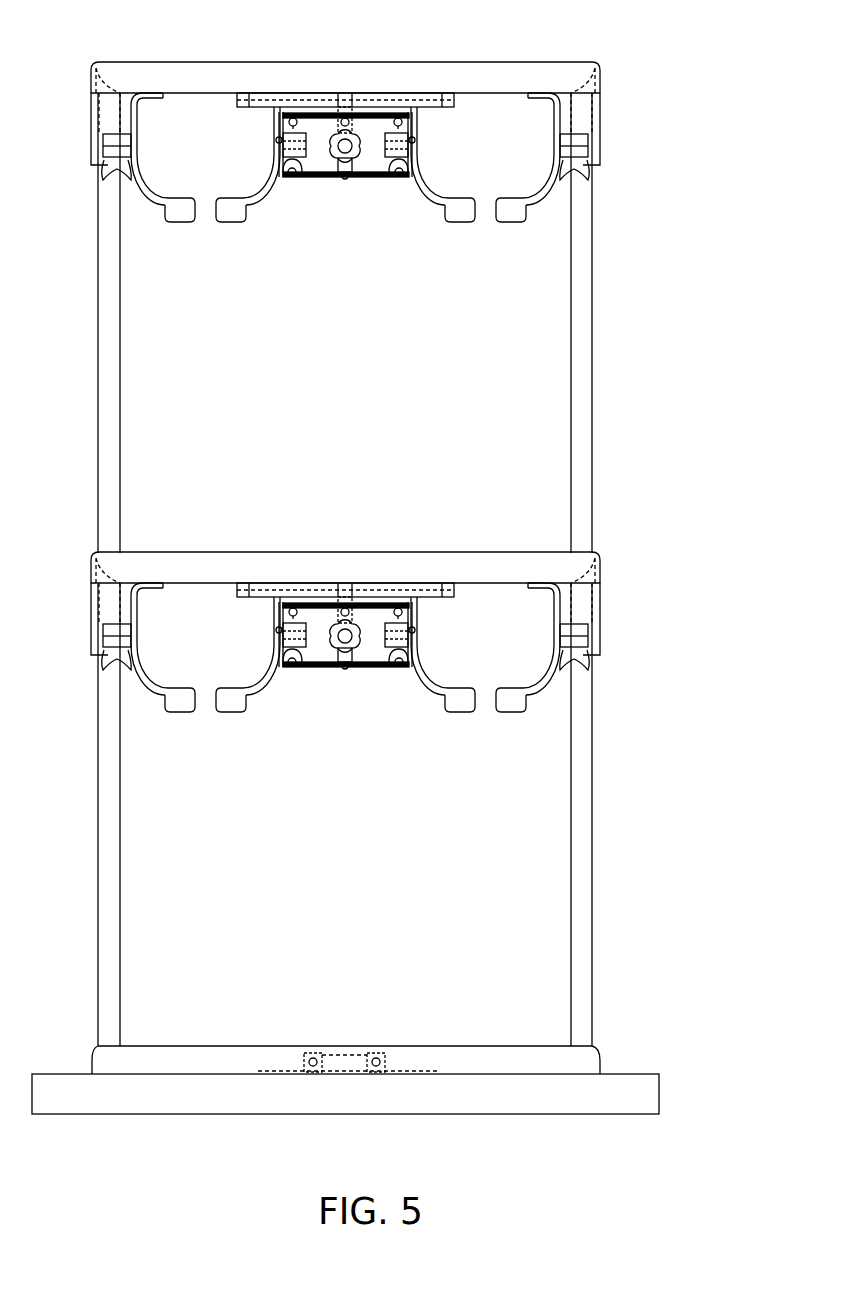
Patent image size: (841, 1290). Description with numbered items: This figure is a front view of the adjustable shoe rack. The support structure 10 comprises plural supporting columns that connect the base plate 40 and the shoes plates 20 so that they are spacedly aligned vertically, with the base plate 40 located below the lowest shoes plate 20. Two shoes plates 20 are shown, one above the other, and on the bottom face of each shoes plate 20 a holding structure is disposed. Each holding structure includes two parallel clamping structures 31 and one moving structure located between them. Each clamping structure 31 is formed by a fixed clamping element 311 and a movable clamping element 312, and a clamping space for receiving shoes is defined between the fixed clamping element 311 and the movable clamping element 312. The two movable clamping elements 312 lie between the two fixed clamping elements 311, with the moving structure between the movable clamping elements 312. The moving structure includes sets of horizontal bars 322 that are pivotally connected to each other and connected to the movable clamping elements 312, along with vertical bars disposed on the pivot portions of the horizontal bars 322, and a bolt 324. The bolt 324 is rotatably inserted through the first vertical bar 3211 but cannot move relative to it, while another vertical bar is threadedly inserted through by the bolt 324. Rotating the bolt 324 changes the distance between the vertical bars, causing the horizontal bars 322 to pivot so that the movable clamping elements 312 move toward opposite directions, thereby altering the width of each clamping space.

The support structure 10 is at (590, 727).
The shoes plate 20 is at (496, 70).
The clamping structure 31 is at (204, 214).
The fixed clamping element 311 is at (181, 213).
The movable clamping element 312 is at (235, 244).
The horizontal bar 322 is at (315, 113).
The bolt 324 is at (356, 140).
The first vertical bar 3211 is at (346, 178).
The base plate 40 is at (630, 1088).